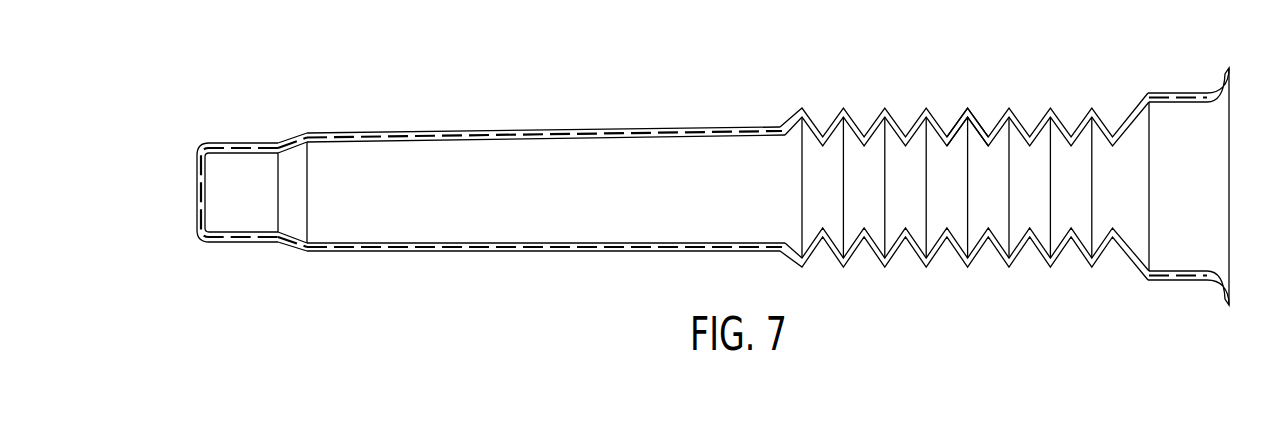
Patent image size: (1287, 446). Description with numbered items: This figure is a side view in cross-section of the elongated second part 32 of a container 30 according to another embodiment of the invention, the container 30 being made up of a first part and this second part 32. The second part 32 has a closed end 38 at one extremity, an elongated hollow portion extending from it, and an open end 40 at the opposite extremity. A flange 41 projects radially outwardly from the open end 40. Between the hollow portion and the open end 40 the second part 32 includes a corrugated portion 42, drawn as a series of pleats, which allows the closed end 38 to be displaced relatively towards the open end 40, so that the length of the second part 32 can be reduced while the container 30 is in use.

The container 30 is at (764, 96).
The second part 32 is at (503, 130).
The closed end 38 is at (197, 196).
The open end 40 is at (1231, 160).
The flange 41 is at (1224, 70).
The corrugated portion 42 is at (970, 110).